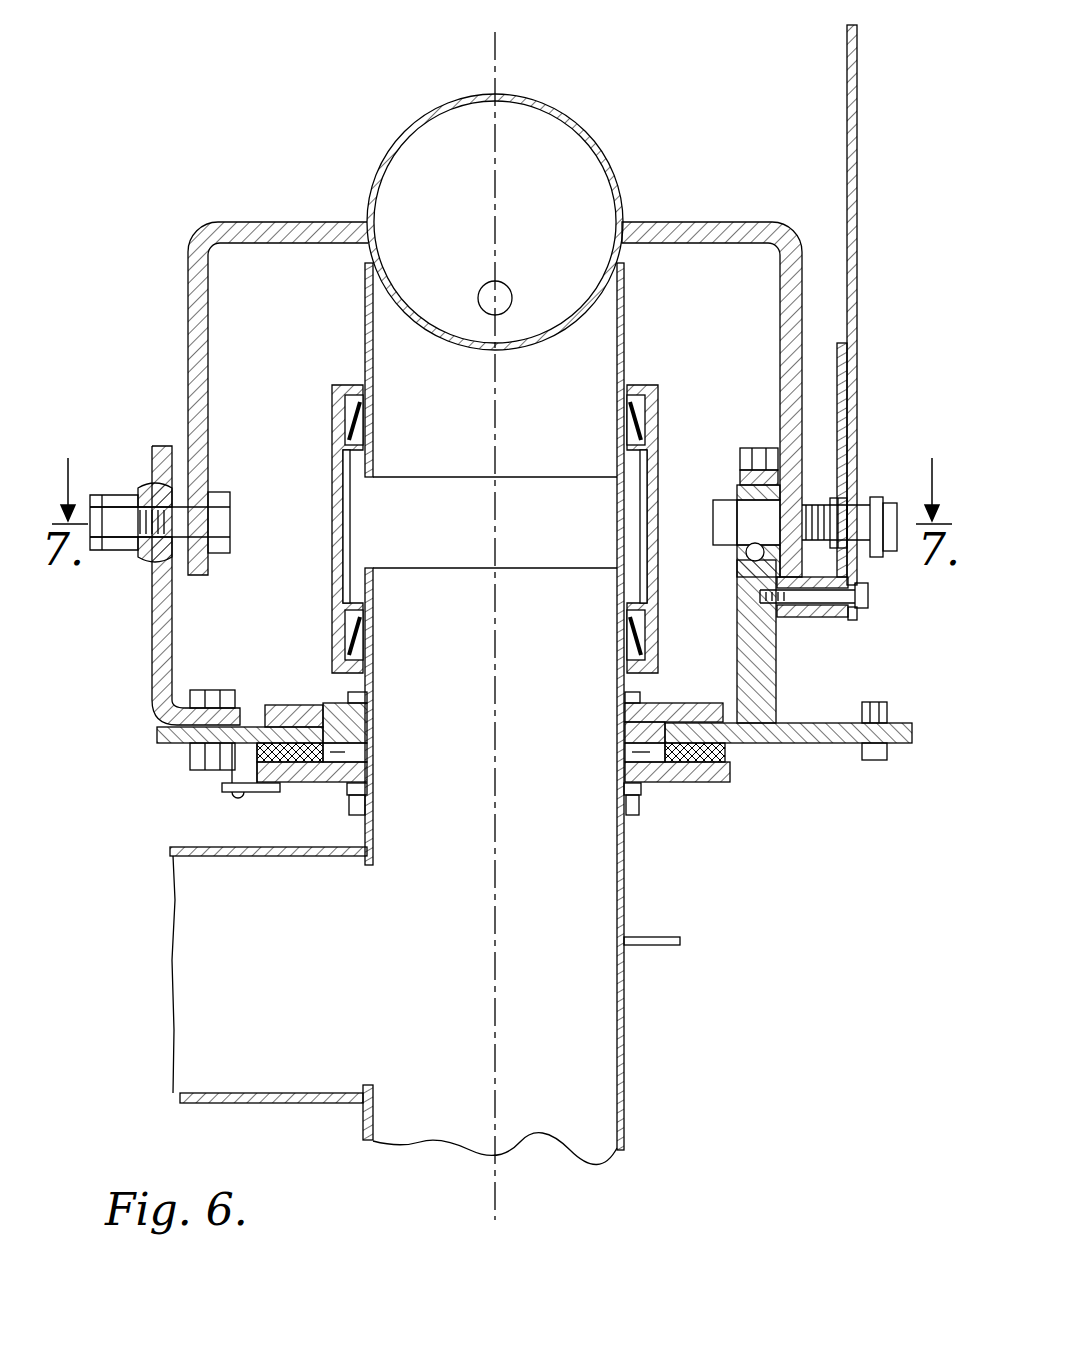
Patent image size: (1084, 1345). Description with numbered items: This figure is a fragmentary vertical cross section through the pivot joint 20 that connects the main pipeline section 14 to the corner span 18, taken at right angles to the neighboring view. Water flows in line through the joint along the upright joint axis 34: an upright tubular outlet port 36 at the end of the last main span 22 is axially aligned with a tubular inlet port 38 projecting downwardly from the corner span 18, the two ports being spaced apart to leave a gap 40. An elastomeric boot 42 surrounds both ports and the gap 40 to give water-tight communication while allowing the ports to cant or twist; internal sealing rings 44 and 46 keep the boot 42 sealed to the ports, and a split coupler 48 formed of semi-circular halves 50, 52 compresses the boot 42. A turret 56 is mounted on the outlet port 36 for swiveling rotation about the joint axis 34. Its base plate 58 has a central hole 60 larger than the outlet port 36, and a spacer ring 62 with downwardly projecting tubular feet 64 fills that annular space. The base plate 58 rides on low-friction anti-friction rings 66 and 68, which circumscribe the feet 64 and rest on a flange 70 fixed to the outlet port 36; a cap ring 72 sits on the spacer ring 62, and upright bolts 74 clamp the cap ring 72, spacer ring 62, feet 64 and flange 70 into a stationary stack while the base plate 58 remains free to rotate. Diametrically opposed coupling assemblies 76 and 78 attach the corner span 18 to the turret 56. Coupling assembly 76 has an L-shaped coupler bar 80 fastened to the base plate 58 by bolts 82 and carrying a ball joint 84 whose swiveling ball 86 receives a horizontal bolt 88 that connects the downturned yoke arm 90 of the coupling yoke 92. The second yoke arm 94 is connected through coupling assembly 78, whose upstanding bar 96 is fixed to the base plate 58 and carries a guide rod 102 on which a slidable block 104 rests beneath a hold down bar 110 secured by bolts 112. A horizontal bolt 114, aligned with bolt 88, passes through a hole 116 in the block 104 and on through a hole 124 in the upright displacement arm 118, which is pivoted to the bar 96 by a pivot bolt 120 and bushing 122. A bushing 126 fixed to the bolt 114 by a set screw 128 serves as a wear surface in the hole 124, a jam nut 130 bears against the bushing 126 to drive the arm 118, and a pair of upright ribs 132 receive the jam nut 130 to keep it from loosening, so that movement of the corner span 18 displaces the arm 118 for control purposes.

The main pipeline section 14 is at (218, 986).
The corner span 18 is at (628, 153).
The pivot joint 20 is at (437, 357).
The main span 22 is at (245, 1103).
The joint axis 34 is at (497, 50).
The outlet port 36 is at (374, 597).
The inlet port 38 is at (626, 337).
The gap 40 is at (580, 520).
The boot 42 is at (642, 524).
The sealing ring 44 is at (358, 437).
The sealing ring 46 is at (633, 616).
The split coupler 48 is at (348, 509).
The coupler half 50 is at (338, 556).
The coupler half 52 is at (655, 548).
The turret 56 is at (140, 712).
The base plate 58 is at (162, 738).
The hole 60 is at (333, 722).
The spacer ring 62 is at (648, 720).
The tubular feet 64 is at (335, 750).
The anti-friction ring 66 is at (715, 750).
The anti-friction ring 68 is at (725, 765).
The flange 70 is at (318, 782).
The cap ring 72 is at (268, 705).
The upright bolts 74 is at (355, 815).
The coupling assembly 76 is at (149, 590).
The coupling assembly 78 is at (782, 660).
The coupler bar 80 is at (162, 660).
The bolts 82 is at (212, 688).
The ball joint 84 is at (135, 465).
The swiveling ball 86 is at (152, 545).
The bolt 88 is at (205, 520).
The yoke arm 90 is at (203, 240).
The coupling yoke 92 is at (295, 190).
The yoke arm 94 is at (724, 225).
The upstanding bar 96 is at (766, 703).
The guide rod 102 is at (752, 578).
The block 104 is at (810, 502).
The hold down bar 110 is at (740, 475).
The bolts 112 is at (748, 455).
The bolt 114 is at (720, 505).
The hole 116 is at (750, 550).
The displacement arm 118 is at (858, 212).
The pivot bolt 120 is at (850, 597).
The bushing 122 is at (805, 615).
The hole 124 is at (848, 495).
The bushing 126 is at (895, 550).
The set screw 128 is at (881, 513).
The jam nut 130 is at (840, 520).
The upright ribs 132 is at (841, 345).